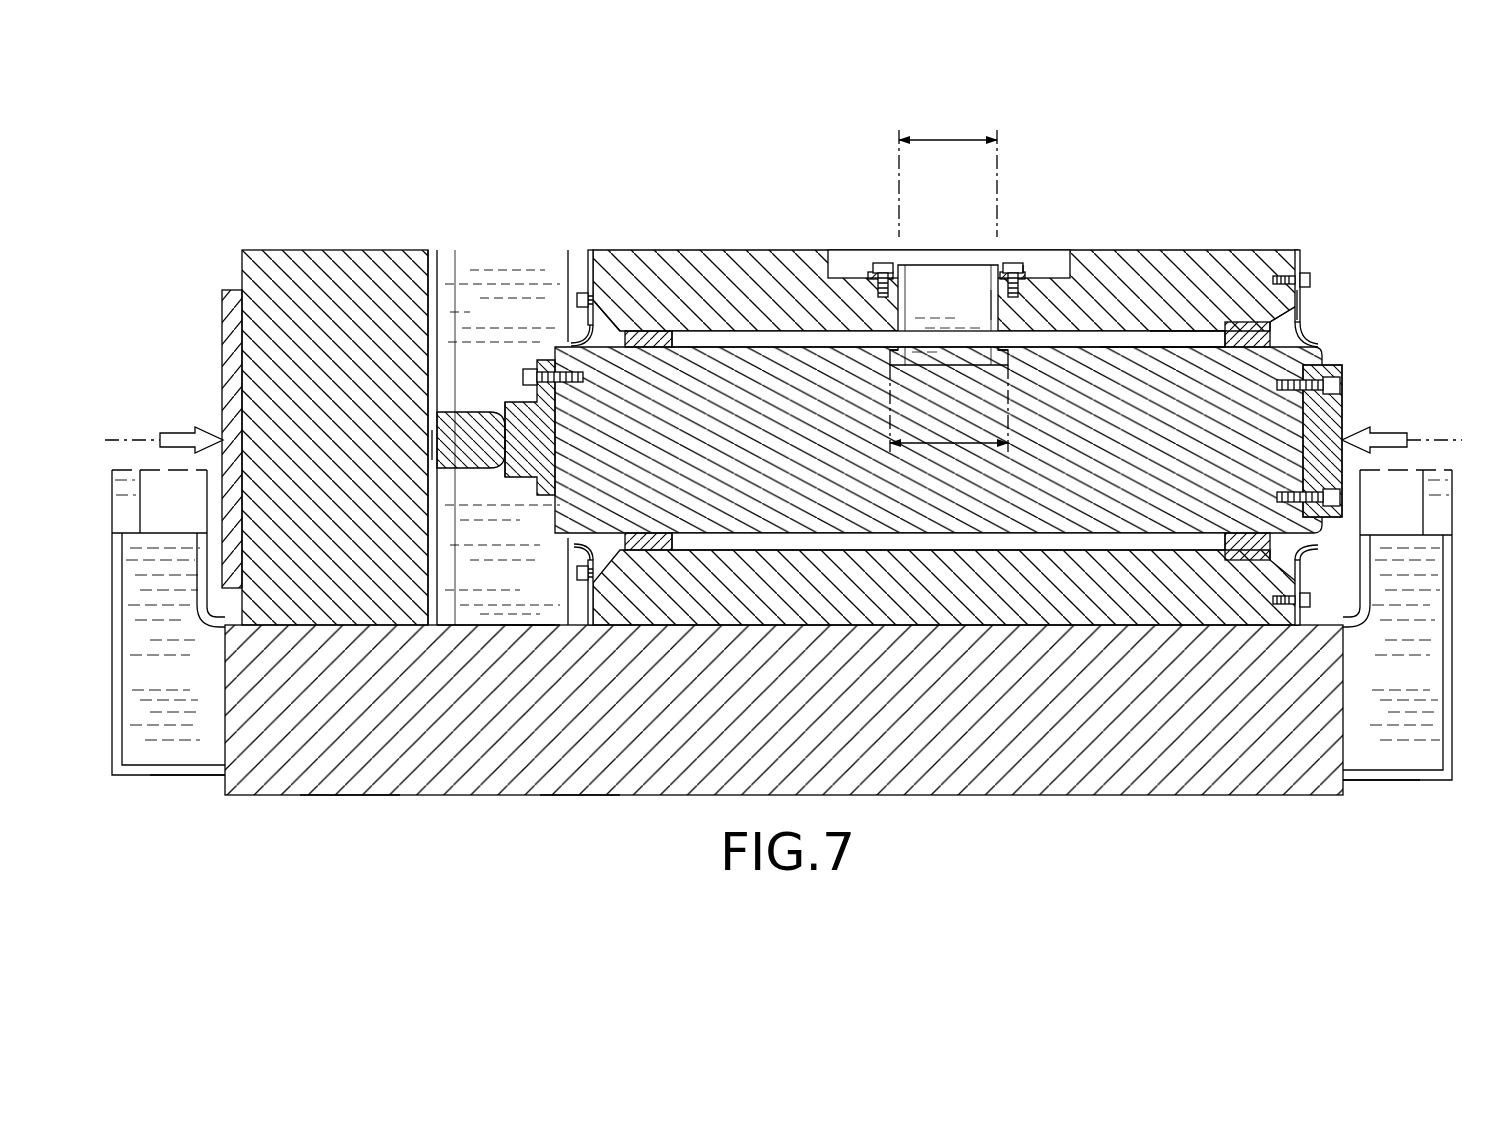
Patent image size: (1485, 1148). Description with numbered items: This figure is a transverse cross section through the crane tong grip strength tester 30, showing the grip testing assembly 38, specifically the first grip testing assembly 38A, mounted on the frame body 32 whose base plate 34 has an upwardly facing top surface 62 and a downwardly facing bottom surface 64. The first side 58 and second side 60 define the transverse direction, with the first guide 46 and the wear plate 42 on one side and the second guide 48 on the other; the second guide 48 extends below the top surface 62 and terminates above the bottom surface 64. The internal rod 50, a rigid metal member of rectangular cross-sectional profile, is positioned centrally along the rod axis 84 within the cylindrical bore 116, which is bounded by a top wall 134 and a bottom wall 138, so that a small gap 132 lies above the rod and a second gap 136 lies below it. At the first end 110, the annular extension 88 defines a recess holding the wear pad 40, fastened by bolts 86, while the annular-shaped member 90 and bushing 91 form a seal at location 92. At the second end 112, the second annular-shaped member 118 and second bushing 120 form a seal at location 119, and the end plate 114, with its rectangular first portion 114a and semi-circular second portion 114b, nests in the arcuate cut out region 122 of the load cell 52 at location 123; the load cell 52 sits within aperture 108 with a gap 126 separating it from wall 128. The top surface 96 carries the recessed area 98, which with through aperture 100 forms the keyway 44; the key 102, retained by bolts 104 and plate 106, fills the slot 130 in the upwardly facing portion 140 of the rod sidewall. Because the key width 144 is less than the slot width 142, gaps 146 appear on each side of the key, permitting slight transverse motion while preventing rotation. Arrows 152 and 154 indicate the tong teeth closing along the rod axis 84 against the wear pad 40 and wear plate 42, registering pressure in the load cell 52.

The crane tong grip strength tester 30 is at (1222, 150).
The frame body 32 is at (352, 798).
The base plate 34 is at (495, 798).
The grip testing assembly 38 is at (315, 393).
The first grip testing assembly 38A is at (315, 393).
The wear pad 40 is at (1340, 400).
The wear plate 42 is at (230, 338).
The keyway 44 is at (894, 239).
The first guide 46 is at (145, 748).
The second guide 48 is at (1395, 745).
The internal rod 50 is at (1143, 344).
The load cell 52 is at (475, 470).
The first side 58 is at (200, 797).
The second side 60 is at (1350, 797).
The top surface 62 is at (725, 624).
The bottom surface 64 is at (580, 798).
The rod axis 84 is at (115, 440).
The bolts 86 is at (1332, 365).
The annular extension 88 is at (1388, 437).
The annular-shaped member 90 is at (1302, 262).
The bushing 91 is at (1256, 335).
The seal location 92 is at (1302, 302).
The top surface 96 is at (373, 248).
The recessed area 98 is at (850, 250).
The through aperture 100 is at (992, 297).
The key 102 is at (940, 277).
The bolts 104 is at (878, 262).
The plate 106 is at (1032, 277).
The aperture 108 is at (487, 272).
The first end 110 is at (1311, 335).
The second end 112 is at (520, 627).
The end plate 114 is at (392, 411).
The first portion 114a is at (535, 493).
The second portion 114b is at (507, 390).
The cylindrical bore 116 is at (1094, 330).
The second annular-shaped member 118 is at (588, 285).
The seal location 119 is at (568, 336).
The second bushing 120 is at (651, 303).
The arcuate cut out region 122 is at (513, 396).
The mating location 123 is at (510, 445).
The gap 126 is at (430, 443).
The wall 128 is at (432, 318).
The slot 130 is at (1002, 398).
The gap 132 is at (745, 320).
The top wall 134 is at (1168, 332).
The second gap 136 is at (978, 540).
The bottom wall 138 is at (895, 548).
The upwardly facing portion 140 is at (1196, 346).
The slot width 142 is at (955, 447).
The key width 144 is at (948, 140).
The gaps 146 is at (890, 357).
The arrow 152 is at (178, 438).
The arrow 154 is at (1400, 430).